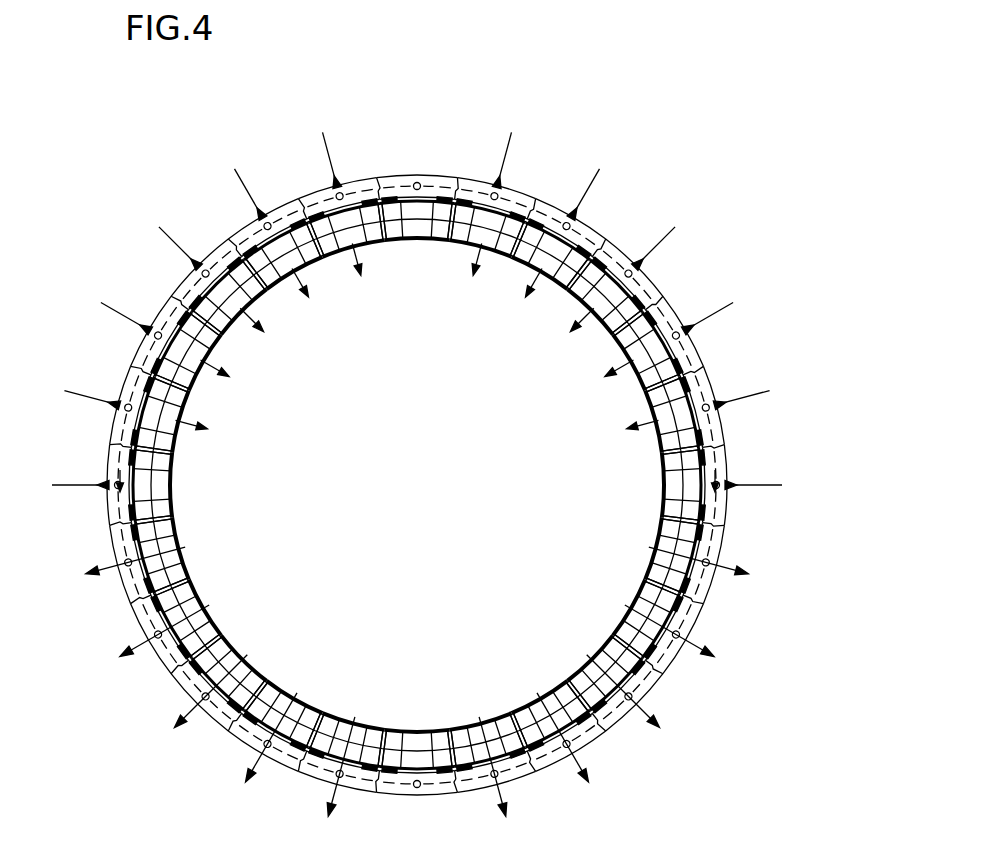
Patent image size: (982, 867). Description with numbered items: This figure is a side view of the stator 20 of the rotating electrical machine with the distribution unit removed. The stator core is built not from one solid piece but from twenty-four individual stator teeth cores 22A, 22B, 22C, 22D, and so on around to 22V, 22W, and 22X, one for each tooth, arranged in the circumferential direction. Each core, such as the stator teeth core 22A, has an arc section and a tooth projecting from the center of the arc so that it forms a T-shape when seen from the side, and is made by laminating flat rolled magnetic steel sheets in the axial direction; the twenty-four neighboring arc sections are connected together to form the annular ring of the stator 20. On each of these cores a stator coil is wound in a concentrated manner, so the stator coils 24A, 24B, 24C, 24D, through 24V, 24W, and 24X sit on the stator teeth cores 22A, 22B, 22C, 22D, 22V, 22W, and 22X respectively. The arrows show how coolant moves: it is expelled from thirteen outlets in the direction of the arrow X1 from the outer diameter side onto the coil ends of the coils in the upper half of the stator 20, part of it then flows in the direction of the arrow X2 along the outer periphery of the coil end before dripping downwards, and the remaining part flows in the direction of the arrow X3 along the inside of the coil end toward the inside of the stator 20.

The stator 20 is at (470, 474).
The stator teeth core 22A is at (445, 180).
The stator teeth core 22B is at (523, 198).
The stator teeth core 22C is at (580, 228).
The stator teeth core 22D is at (643, 283).
The stator teeth core 22V is at (195, 283).
The stator teeth core 22W is at (250, 232).
The stator teeth core 22X is at (313, 192).
The stator coil 24A is at (383, 247).
The stator coil 24B is at (487, 250).
The stator coil 24C is at (545, 273).
The stator coil 24D is at (597, 305).
The stator coil 24V is at (239, 320).
The stator coil 24W is at (283, 267).
The stator coil 24X is at (332, 253).
The arrow X1 is at (417, 170).
The arrow X2 is at (150, 350).
The arrow X3 is at (417, 232).